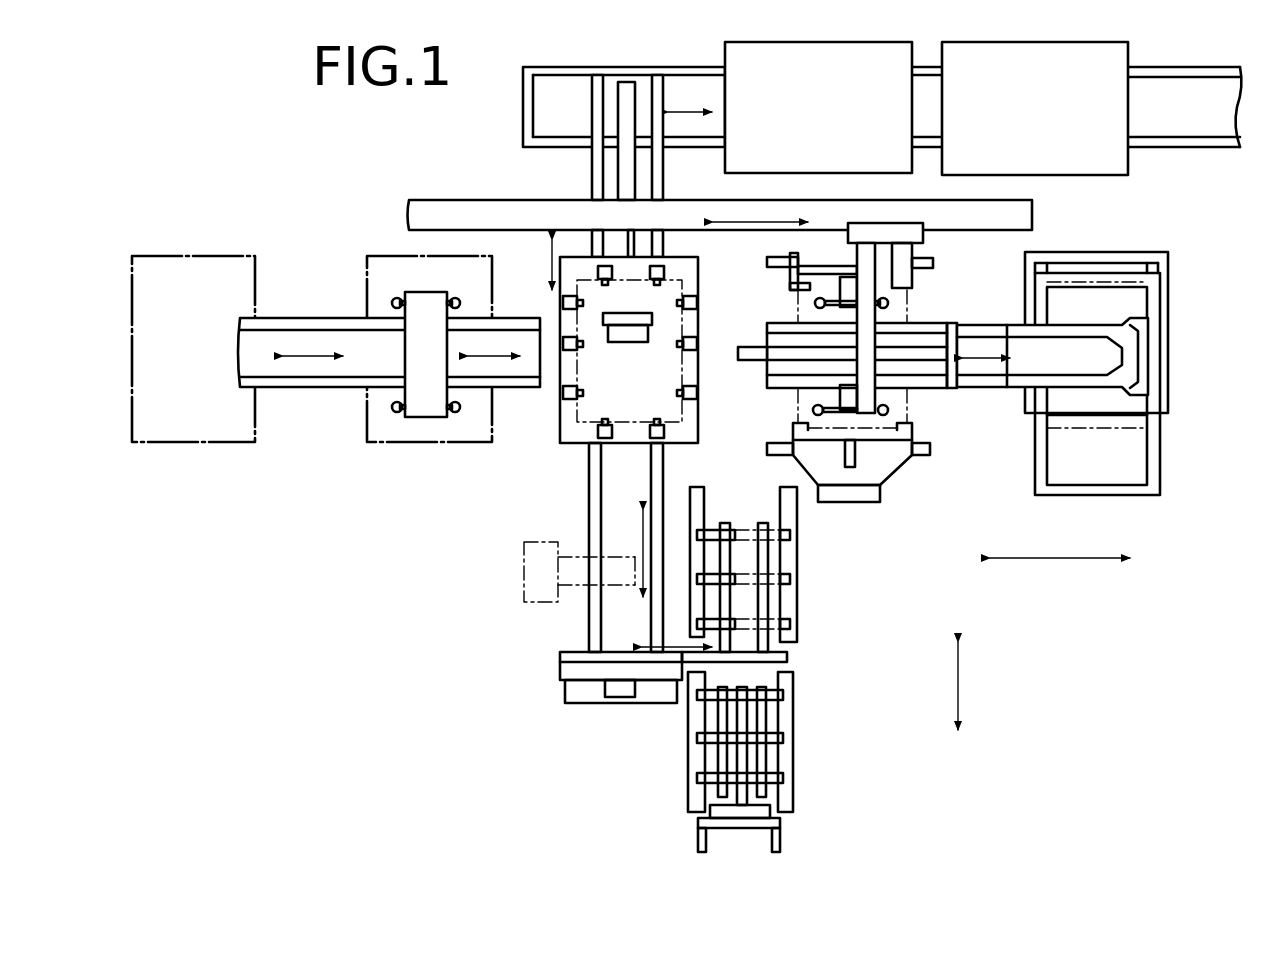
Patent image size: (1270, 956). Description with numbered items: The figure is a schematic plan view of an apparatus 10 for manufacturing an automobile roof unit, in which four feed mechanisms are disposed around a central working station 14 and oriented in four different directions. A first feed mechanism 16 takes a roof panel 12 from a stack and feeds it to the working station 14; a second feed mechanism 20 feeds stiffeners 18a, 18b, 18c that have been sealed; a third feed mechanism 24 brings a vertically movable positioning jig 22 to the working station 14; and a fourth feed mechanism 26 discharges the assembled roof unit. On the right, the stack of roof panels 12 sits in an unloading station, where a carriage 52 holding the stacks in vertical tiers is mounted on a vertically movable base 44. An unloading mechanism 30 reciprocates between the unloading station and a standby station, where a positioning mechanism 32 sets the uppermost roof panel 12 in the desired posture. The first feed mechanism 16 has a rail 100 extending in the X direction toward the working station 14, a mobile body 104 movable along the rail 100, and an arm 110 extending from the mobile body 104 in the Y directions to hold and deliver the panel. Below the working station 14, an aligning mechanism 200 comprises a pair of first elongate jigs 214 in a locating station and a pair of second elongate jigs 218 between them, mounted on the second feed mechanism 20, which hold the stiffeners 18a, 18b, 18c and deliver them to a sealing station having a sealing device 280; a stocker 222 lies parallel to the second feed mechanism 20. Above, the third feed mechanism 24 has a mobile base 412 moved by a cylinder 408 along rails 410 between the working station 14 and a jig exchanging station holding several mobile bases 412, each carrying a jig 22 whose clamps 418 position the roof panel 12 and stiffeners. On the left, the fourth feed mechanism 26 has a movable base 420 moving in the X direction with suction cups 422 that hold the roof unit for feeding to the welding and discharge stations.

The apparatus 10 is at (488, 114).
The roof panel 12 is at (682, 420).
The working station 14 is at (555, 445).
The first feed mechanism 16 is at (975, 263).
The stiffener 18a is at (773, 541).
The stiffener 18b is at (790, 580).
The stiffener 18c is at (795, 628).
The second feed mechanism 20 is at (590, 708).
The positioning jig 22 is at (697, 286).
The third feed mechanism 24 is at (600, 158).
The fourth feed mechanism 26 is at (430, 420).
The unloading mechanism 30 is at (1000, 325).
The positioning mechanism 32 is at (887, 478).
The base 44 is at (1153, 300).
The carriage 52 is at (1087, 428).
The rail 100 is at (765, 212).
The mobile body 104 is at (885, 232).
The arm 110 is at (877, 308).
The aligning mechanism 200 is at (805, 636).
The first elongate jigs 214 is at (795, 527).
The second elongate jigs 218 is at (728, 523).
The stocker 222 is at (800, 757).
The sealing device 280 is at (524, 590).
The cylinder 408 is at (630, 172).
The rails 410 is at (596, 121).
The mobile base 412 is at (848, 48).
The clamps 418 is at (612, 273).
The movable base 420 is at (440, 418).
The suction cups 422 is at (460, 303).